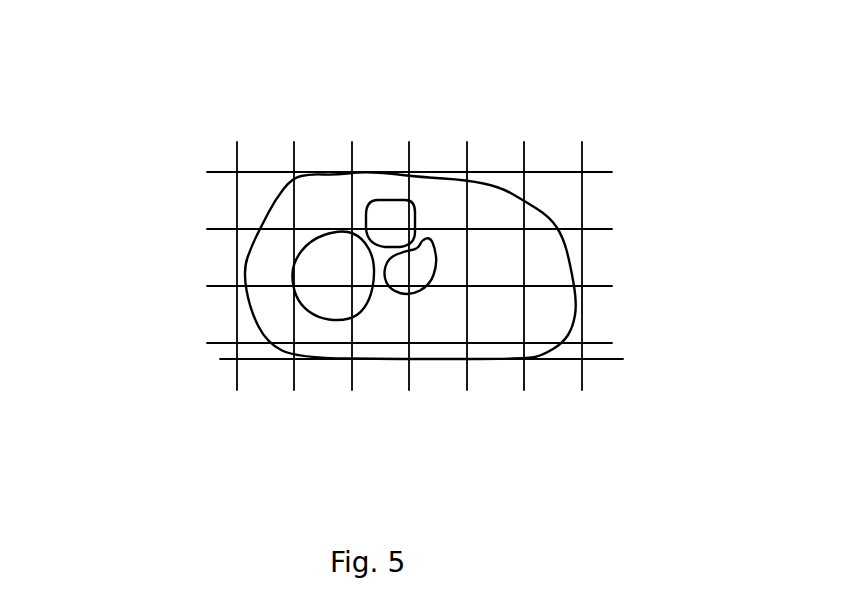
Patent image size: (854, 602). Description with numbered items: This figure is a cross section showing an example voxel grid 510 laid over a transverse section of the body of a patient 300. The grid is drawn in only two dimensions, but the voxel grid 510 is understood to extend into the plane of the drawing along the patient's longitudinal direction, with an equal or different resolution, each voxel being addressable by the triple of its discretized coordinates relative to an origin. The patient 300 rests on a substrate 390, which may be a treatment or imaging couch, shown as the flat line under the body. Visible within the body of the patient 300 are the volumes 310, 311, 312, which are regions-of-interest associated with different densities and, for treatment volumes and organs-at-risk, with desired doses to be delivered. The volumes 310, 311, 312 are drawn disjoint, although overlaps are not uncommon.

The patient 300 is at (273, 207).
The volume 310 is at (293, 268).
The volume 311 is at (393, 199).
The volume 312 is at (429, 240).
The substrate 390 is at (249, 358).
The voxel grid 510 is at (583, 171).